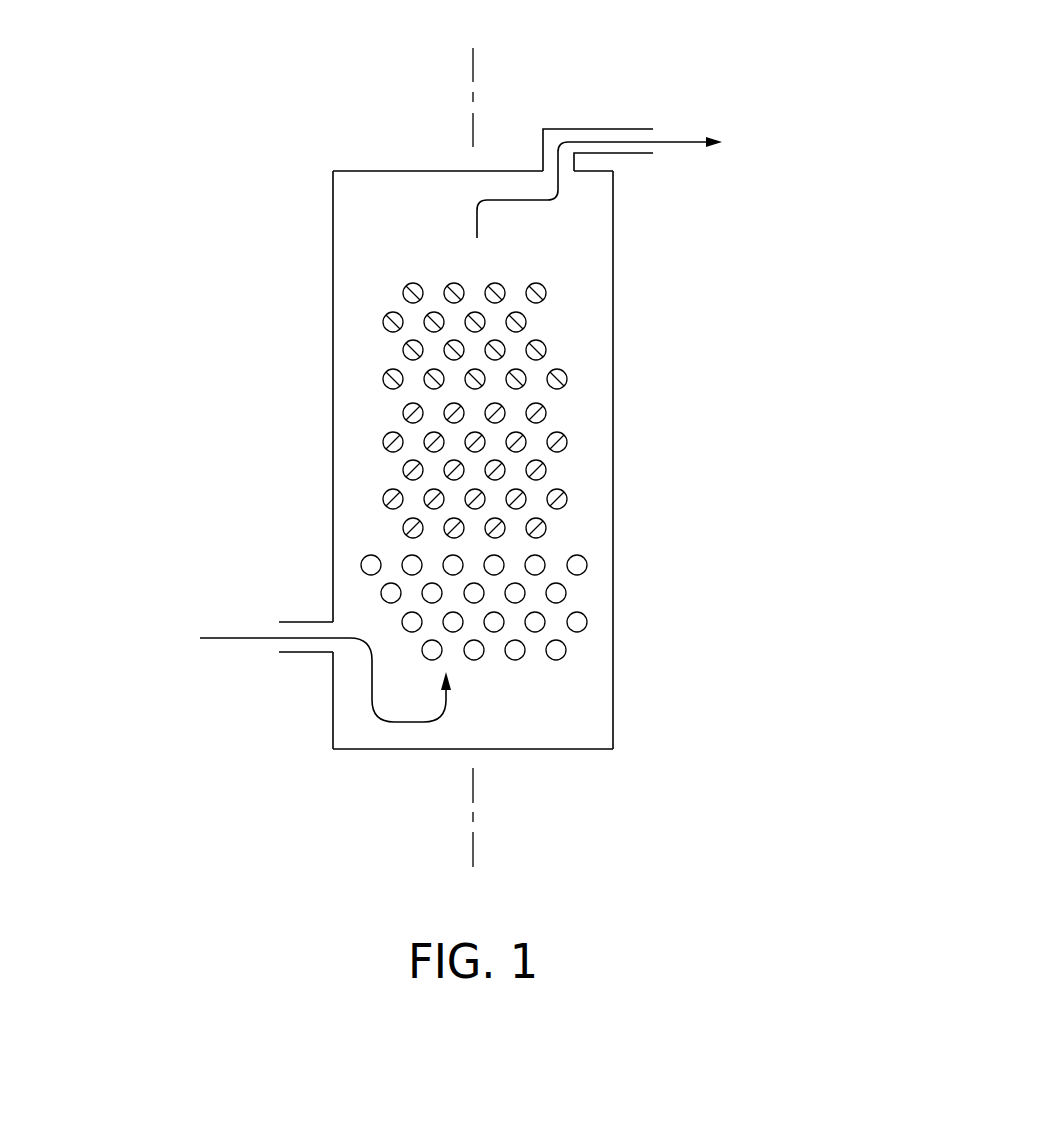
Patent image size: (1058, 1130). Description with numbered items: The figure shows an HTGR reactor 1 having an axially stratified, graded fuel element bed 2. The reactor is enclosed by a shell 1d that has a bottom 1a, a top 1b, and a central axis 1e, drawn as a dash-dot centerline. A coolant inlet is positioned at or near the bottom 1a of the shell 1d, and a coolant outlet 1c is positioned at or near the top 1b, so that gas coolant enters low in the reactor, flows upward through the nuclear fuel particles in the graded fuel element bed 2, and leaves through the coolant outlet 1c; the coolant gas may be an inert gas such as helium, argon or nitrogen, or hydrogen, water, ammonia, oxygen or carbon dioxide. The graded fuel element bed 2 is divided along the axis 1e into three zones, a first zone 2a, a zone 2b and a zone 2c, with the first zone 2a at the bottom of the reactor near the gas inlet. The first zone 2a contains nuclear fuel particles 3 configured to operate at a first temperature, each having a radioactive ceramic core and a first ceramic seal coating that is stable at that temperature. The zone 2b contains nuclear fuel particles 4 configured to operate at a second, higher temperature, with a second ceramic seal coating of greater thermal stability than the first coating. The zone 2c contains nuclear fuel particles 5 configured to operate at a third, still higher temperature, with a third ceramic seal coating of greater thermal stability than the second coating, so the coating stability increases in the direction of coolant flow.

The HTGR reactor 1 is at (268, 279).
The bottom 1a is at (591, 750).
The top 1b is at (375, 170).
The coolant outlet 1c is at (601, 128).
The shell 1d is at (333, 200).
The axis 1e is at (472, 68).
The graded fuel element bed 2 is at (758, 273).
The first zone 2a is at (637, 660).
The zone 2b is at (655, 553).
The zone 2c is at (637, 273).
The nuclear fuel particles 3 is at (402, 621).
The nuclear fuel particles 4 is at (403, 470).
The nuclear fuel particles 5 is at (404, 290).